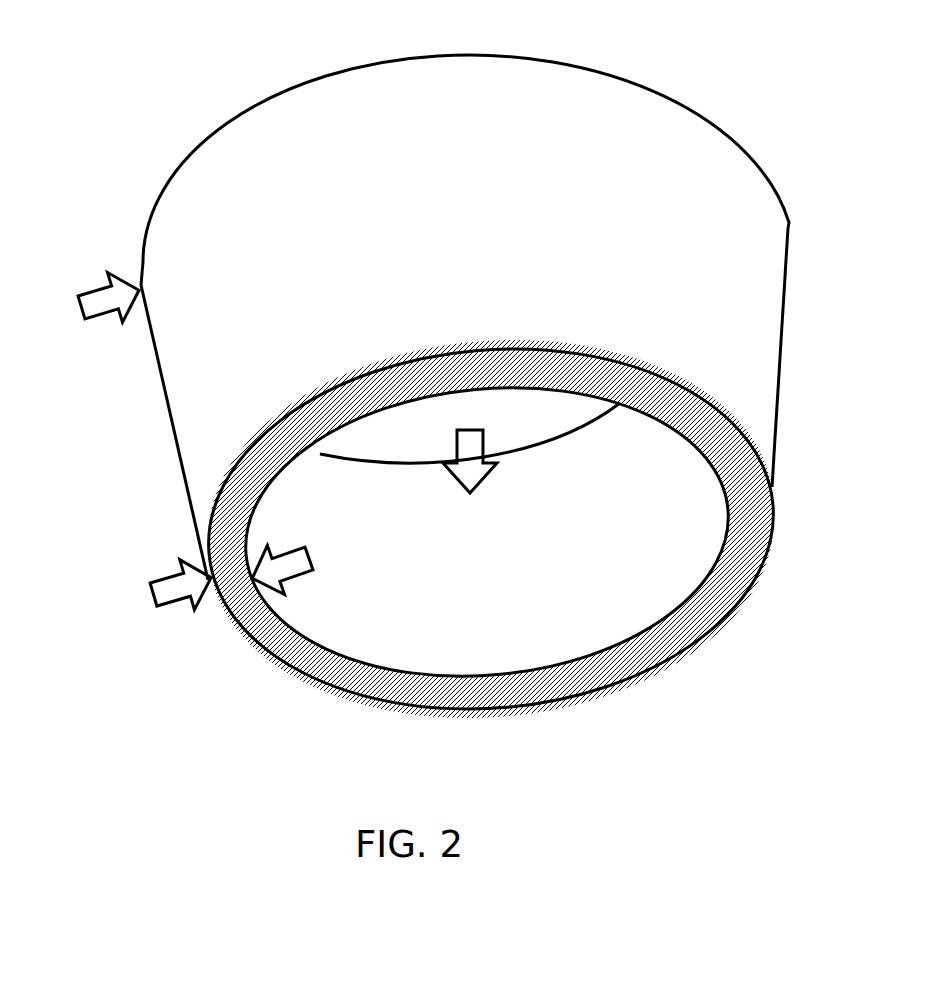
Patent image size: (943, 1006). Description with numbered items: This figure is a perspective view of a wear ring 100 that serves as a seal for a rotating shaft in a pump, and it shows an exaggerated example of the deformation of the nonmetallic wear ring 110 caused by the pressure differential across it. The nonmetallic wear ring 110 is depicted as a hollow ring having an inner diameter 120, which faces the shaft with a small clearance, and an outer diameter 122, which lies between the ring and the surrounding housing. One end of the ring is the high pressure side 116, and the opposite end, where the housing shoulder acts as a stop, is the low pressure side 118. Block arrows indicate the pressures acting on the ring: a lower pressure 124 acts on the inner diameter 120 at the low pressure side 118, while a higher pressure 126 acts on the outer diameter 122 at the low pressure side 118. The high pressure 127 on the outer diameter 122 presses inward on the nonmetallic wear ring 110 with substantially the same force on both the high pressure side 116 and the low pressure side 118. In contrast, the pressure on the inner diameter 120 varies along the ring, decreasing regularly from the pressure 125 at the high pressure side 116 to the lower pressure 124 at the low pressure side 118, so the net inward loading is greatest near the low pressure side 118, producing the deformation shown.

The wear ring 100 is at (692, 128).
The nonmetallic wear ring 110 is at (218, 113).
The high pressure side 116 is at (662, 87).
The low pressure side 118 is at (360, 388).
The inner diameter 120 is at (582, 596).
The outer diameter 122 is at (472, 254).
The lower pressure 124 is at (290, 567).
The pressure 125 is at (472, 448).
The higher pressure 126 is at (172, 590).
The high pressure 127 is at (102, 297).